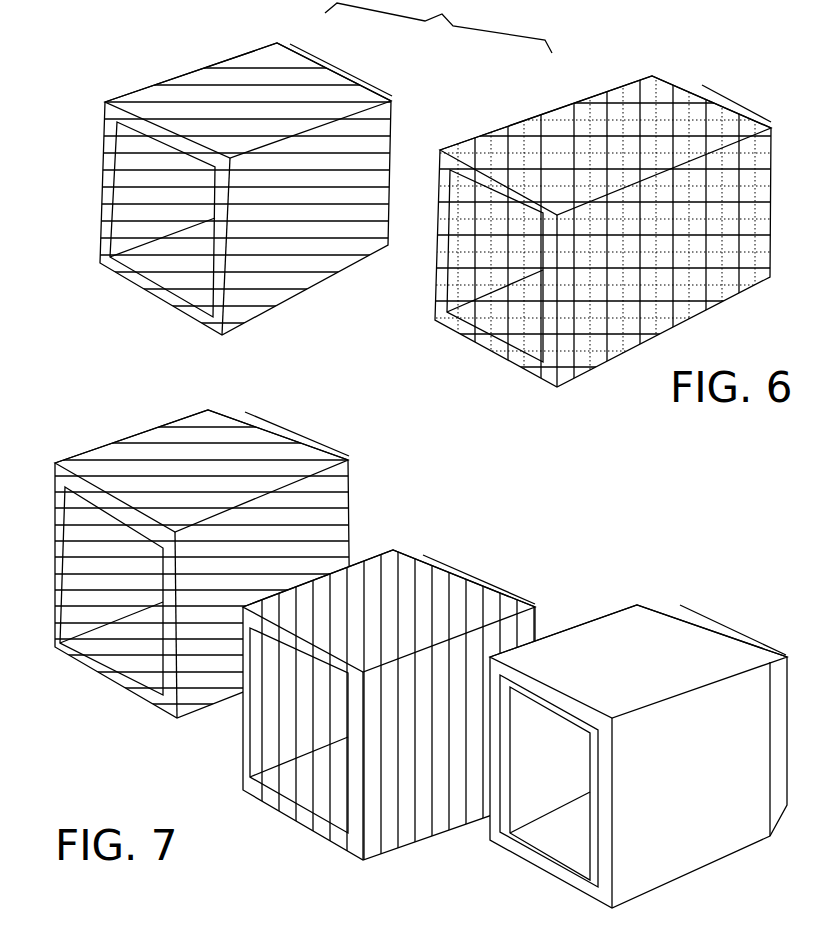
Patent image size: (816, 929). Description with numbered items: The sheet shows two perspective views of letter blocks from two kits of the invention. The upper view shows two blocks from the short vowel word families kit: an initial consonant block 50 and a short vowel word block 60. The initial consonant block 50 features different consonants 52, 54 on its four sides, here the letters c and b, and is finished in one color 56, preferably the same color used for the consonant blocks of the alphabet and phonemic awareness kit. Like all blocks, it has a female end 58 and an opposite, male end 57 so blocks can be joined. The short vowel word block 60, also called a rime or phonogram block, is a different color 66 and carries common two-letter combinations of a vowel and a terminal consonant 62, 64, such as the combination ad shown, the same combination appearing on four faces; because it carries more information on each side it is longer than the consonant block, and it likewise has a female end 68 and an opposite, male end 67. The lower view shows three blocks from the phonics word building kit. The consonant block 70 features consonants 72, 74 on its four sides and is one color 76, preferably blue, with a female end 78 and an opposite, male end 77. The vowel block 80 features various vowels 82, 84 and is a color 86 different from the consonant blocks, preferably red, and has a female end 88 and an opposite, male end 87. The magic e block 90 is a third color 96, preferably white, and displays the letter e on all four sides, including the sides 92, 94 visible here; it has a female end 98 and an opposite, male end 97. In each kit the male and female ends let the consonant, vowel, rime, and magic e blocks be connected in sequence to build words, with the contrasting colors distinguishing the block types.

In FIG. 6, the initial consonant block 50 is at (210, 180).
In FIG. 6, the consonant 52 is at (218, 85).
In FIG. 6, the consonant 54 is at (272, 290).
In FIG. 6, the color 56 is at (253, 63).
In FIG. 6, the male end 57 is at (318, 68).
In FIG. 6, the female end 58 is at (157, 263).
In FIG. 6, the short vowel word block 60 is at (587, 219).
In FIG. 6, the two-letter combination of vowel and terminal consonant 62 is at (617, 100).
In FIG. 6, the two-letter combination of vowel and terminal consonant 64 is at (618, 317).
In FIG. 6, the color 66 is at (648, 92).
In FIG. 6, the male end 67 is at (720, 97).
In FIG. 6, the female end 68 is at (463, 270).
In FIG. 7, the consonant block 70 is at (197, 564).
In FIG. 7, the consonant 72 is at (193, 427).
In FIG. 7, the consonant 74 is at (213, 670).
In FIG. 7, the color 76 is at (213, 430).
In FIG. 7, the male end 77 is at (255, 423).
In FIG. 7, the female end 78 is at (103, 645).
In FIG. 7, the vowel block 80 is at (388, 689).
In FIG. 7, the vowel 82 is at (402, 593).
In FIG. 7, the vowel 84 is at (417, 800).
In FIG. 7, the color 86 is at (430, 583).
In FIG. 7, the male end 87 is at (483, 590).
In FIG. 7, the female end 88 is at (302, 793).
In FIG. 7, the magic e block 90 is at (645, 722).
In FIG. 7, the side 92 is at (637, 630).
In FIG. 7, the side 94 is at (693, 830).
In FIG. 7, the color 96 is at (660, 622).
In FIG. 7, the male end 97 is at (727, 637).
In FIG. 7, the female end 98 is at (537, 835).